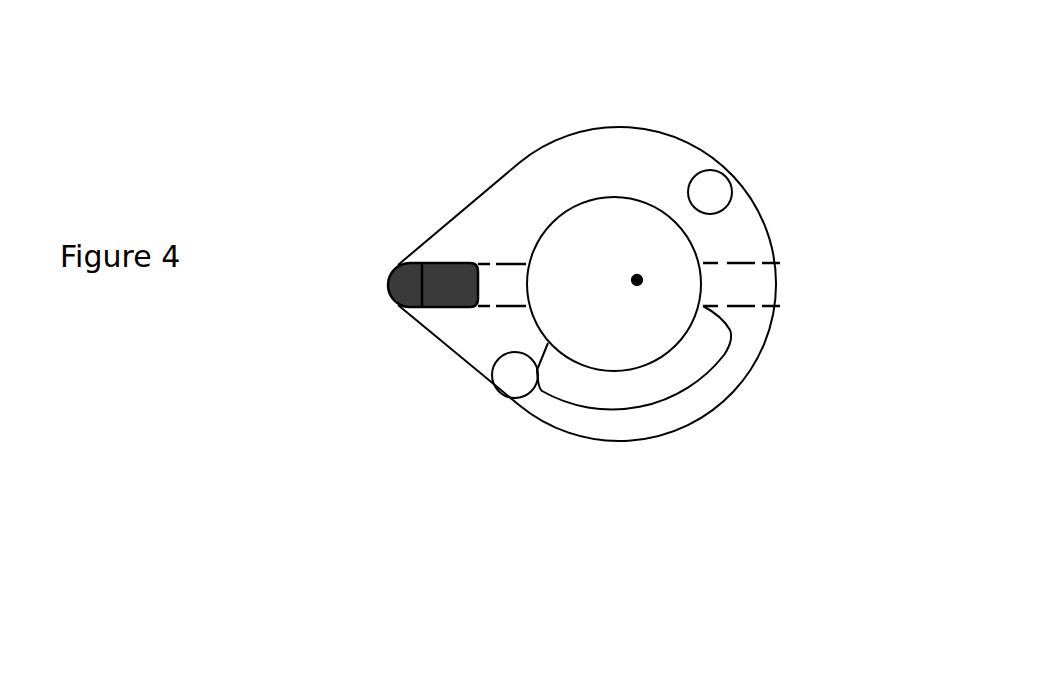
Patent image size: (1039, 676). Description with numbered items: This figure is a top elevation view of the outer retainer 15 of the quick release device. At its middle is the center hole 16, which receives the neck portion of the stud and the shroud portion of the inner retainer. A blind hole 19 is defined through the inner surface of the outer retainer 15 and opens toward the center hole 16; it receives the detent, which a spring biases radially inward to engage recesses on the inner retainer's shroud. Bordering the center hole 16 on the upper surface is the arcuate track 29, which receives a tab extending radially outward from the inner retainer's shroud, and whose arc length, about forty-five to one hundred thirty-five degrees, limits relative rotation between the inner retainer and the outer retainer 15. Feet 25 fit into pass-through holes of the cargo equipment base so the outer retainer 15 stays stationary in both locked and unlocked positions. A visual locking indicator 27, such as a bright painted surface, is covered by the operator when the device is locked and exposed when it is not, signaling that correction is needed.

The outer retainer 15 is at (737, 240).
The center hole 16 is at (637, 280).
The blind hole 19 is at (505, 285).
The feet 25 is at (705, 188).
The visual locking indicator 27 is at (390, 292).
The arcuate track 29 is at (692, 365).